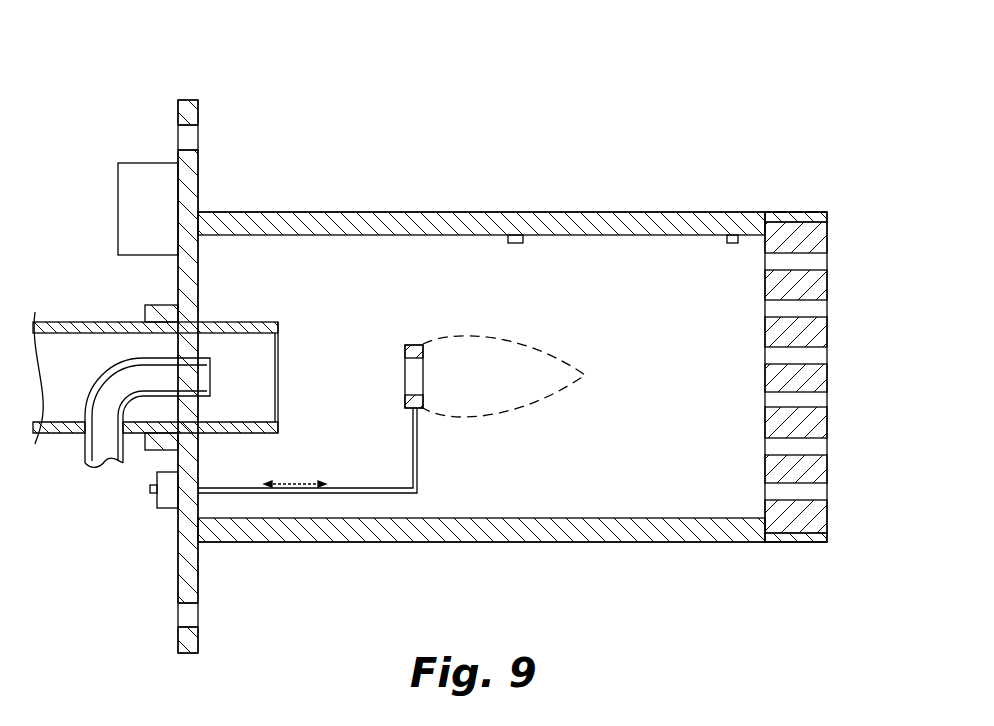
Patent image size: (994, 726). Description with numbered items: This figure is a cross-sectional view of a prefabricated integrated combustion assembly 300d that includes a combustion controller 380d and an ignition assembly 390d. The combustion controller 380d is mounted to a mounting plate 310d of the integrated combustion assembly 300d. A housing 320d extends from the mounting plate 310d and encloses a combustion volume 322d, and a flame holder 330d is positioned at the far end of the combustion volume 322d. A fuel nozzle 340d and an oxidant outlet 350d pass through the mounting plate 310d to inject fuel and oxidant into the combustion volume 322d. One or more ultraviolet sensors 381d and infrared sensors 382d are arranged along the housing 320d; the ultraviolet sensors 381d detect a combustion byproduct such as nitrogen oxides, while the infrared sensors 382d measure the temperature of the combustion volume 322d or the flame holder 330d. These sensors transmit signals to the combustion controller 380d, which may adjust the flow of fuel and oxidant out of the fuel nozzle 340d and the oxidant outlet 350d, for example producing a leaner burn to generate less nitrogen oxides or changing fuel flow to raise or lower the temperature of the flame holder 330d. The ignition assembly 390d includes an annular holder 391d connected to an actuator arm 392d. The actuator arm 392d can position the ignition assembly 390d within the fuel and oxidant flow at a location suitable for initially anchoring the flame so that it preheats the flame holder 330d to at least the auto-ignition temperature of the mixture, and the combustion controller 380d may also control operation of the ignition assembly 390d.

The integrated combustion assembly 300d is at (845, 96).
The mounting plate 310d is at (178, 153).
The housing tube 320d is at (408, 212).
The combustion volume 322d is at (490, 267).
The flame holder 330d is at (828, 287).
The fuel nozzle 340d is at (140, 353).
The oxidant outlet 350d is at (280, 341).
The combustion controller 380d is at (170, 220).
The ultraviolet sensor 381d is at (525, 240).
The infrared sensor 382d is at (740, 240).
The ignition assembly 390d is at (433, 418).
The annular holder 391d is at (418, 343).
The actuator arm 392d is at (420, 470).